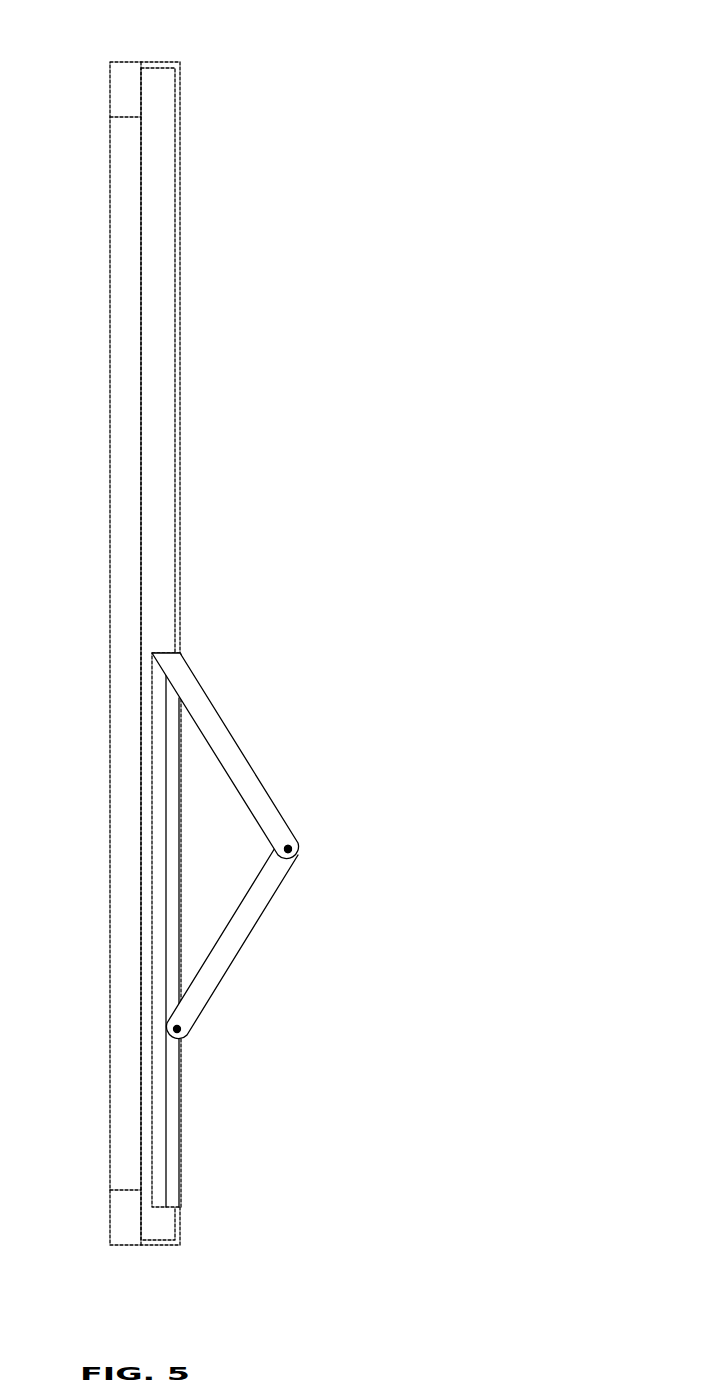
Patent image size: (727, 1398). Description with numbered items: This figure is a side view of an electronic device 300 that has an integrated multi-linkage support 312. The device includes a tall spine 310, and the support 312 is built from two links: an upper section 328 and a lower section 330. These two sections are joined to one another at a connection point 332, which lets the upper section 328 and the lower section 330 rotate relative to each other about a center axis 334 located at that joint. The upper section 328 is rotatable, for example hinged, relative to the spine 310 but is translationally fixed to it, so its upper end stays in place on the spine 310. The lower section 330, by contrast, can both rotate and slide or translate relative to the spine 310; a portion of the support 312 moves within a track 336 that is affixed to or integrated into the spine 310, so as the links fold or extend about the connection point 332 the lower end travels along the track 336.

The electronic device 300 is at (247, 68).
The spine 310 is at (182, 290).
The multi-linkage support 312 is at (249, 694).
The upper section 328 is at (253, 768).
The lower section 330 is at (262, 918).
The connection point 332 is at (307, 848).
The center axis 334 is at (400, 858).
The track 336 is at (181, 1172).